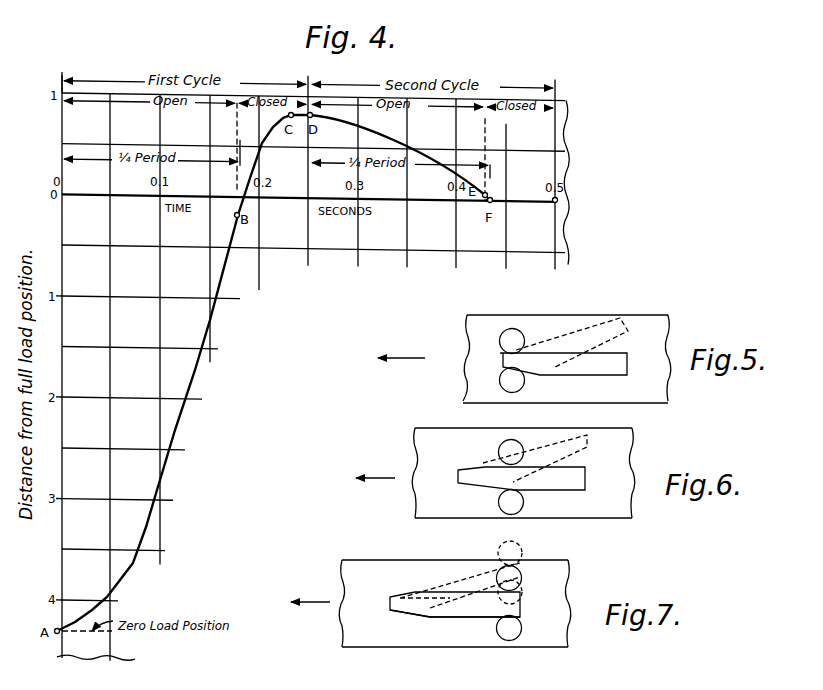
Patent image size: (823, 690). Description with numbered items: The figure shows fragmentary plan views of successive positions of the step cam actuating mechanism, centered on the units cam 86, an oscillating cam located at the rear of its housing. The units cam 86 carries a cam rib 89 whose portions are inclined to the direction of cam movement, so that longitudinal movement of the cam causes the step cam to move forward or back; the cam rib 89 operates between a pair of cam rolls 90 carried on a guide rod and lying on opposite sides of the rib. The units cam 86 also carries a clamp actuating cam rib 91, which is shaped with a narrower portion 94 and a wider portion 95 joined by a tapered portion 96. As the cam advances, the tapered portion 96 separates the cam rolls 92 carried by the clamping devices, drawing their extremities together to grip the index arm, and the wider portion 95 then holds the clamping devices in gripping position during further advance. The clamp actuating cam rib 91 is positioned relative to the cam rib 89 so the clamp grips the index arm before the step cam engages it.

In FIG. 5, the units cam 86 is at (517, 320).
In FIG. 6, the units cam 86 is at (433, 440).
In FIG. 7, the units cam 86 is at (374, 640).
In FIG. 5, the cam rib 89 is at (618, 320).
In FIG. 6, the cam rib 89 is at (572, 436).
In FIG. 7, the cam roll 90 is at (522, 546).
In FIG. 5, the clamp actuating cam rib 91 is at (632, 350).
In FIG. 6, the clamp actuating cam rib 91 is at (574, 480).
In FIG. 7, the clamp actuating cam rib 91 is at (521, 609).
In FIG. 5, the cam roll 92 is at (503, 378).
In FIG. 6, the cam roll 92 is at (510, 442).
In FIG. 7, the cam roll 92 is at (513, 577).
In FIG. 7, the narrower portion 94 is at (397, 599).
In FIG. 7, the wider portion 95 is at (473, 618).
In FIG. 7, the tapered portion 96 is at (418, 620).